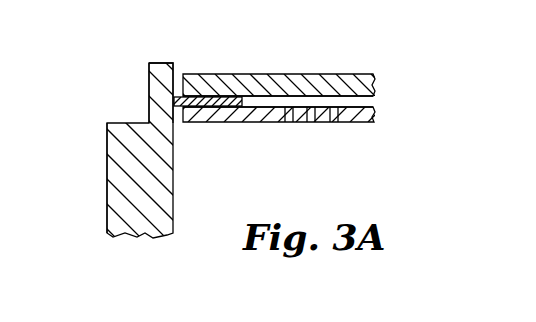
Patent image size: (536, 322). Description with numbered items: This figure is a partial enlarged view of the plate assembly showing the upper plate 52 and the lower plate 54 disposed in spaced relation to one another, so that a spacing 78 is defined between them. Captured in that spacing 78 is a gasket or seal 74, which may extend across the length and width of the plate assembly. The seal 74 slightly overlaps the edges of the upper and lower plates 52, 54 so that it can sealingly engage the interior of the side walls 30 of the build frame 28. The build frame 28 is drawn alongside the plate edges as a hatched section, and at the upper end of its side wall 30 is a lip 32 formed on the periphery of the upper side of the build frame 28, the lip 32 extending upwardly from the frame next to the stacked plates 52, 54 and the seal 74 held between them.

The build frame 28 is at (107, 198).
The side walls 30 is at (107, 165).
The lip 32 is at (148, 83).
The upper plate 52 is at (375, 75).
The lower plate 54 is at (378, 112).
The seal 74 is at (218, 101).
The spacing 78 is at (368, 102).